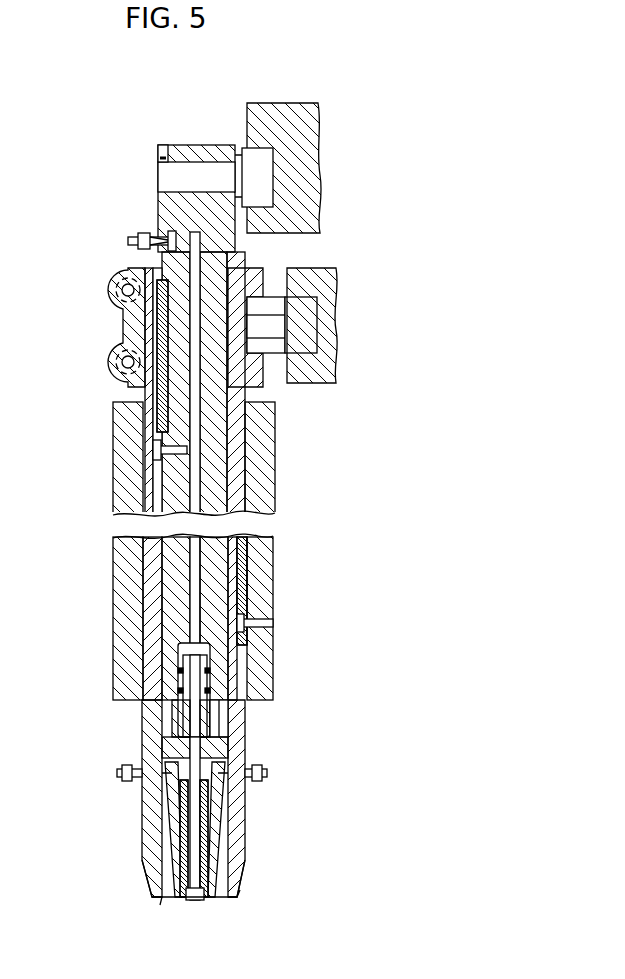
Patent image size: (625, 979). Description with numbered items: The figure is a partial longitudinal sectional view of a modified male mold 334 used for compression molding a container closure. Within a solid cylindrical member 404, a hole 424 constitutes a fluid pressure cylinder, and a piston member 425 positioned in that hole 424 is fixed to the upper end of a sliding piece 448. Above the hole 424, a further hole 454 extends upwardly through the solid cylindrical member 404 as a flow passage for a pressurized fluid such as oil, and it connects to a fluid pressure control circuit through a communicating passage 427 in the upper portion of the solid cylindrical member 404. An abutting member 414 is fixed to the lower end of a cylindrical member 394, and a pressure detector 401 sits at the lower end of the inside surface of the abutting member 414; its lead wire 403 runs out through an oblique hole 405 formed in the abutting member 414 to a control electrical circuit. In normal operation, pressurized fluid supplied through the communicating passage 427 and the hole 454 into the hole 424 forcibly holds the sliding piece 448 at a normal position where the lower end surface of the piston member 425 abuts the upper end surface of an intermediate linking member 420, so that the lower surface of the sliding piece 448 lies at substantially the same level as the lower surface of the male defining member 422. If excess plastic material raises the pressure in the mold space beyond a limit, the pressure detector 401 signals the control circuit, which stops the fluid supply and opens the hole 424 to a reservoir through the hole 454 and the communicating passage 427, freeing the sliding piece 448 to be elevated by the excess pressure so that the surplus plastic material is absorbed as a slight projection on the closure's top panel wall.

The male mold 334 is at (121, 795).
The cylindrical member 394 is at (141, 744).
The pressure detector 401 is at (172, 900).
The lead wire 403 is at (225, 893).
The solid cylindrical member 404 is at (228, 485).
The oblique hole 405 is at (226, 897).
The abutting member 414 is at (158, 901).
The intermediate linking member 420 is at (212, 712).
The male defining member 422 is at (237, 838).
The hole 424 is at (212, 655).
The piston member 425 is at (212, 680).
The communicating passage 427 is at (172, 230).
The sliding piece 448 is at (195, 768).
The hole 454 is at (200, 578).